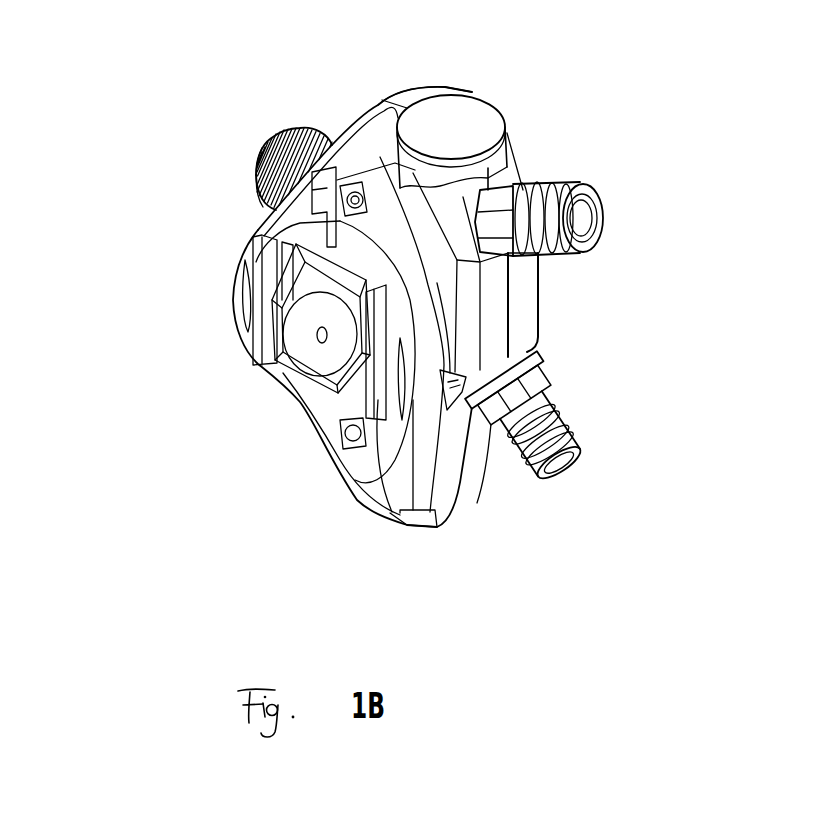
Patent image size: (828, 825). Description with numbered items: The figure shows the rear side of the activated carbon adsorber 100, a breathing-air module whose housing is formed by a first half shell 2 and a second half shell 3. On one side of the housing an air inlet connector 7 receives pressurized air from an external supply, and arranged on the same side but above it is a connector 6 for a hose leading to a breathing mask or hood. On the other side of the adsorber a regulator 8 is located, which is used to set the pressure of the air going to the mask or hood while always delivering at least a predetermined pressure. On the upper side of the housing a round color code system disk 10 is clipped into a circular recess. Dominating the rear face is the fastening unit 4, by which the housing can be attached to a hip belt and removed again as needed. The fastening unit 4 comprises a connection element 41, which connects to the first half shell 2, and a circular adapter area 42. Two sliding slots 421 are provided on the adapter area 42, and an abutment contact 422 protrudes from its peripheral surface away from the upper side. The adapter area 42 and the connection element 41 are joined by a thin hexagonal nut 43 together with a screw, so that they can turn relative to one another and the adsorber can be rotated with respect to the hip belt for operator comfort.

The activated carbon adsorber 100 is at (580, 109).
The first half shell 2 is at (378, 104).
The second half shell 3 is at (444, 83).
The fastening unit 4 is at (245, 206).
The connector 6 is at (603, 215).
The air inlet connector 7 is at (583, 447).
The regulator 8 is at (316, 124).
The color code system disk 10 is at (470, 128).
The connection element 41 is at (407, 273).
The adapter area 42 is at (417, 480).
The hexagonal nut 43 is at (335, 352).
The sliding slot 421 is at (254, 357).
The abutment contact 422 is at (323, 213).